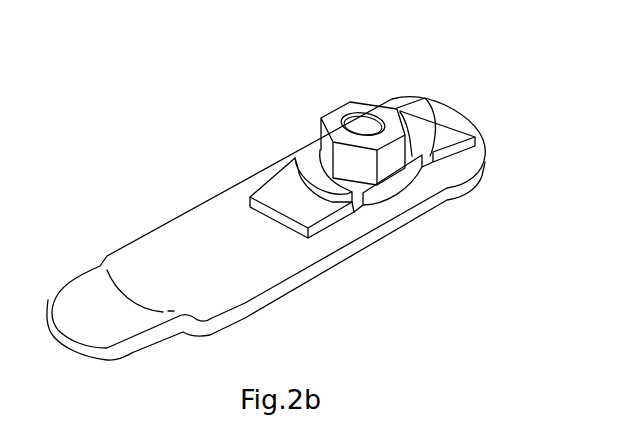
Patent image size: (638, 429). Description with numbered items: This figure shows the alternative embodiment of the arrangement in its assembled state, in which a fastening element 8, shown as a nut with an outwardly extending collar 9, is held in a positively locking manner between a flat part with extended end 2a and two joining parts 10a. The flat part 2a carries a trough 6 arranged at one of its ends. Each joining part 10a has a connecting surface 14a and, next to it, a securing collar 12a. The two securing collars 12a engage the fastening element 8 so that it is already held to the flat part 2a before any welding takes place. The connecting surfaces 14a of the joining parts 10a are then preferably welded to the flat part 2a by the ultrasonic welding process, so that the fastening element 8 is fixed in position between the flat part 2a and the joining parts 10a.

The flat part with extended end 2a is at (297, 203).
The trough 6 is at (87, 292).
The fastening element 8 is at (351, 101).
The collar 9 is at (405, 188).
The joining part 10a is at (455, 172).
The securing collar 12a is at (305, 163).
The connecting surface 14a is at (282, 193).